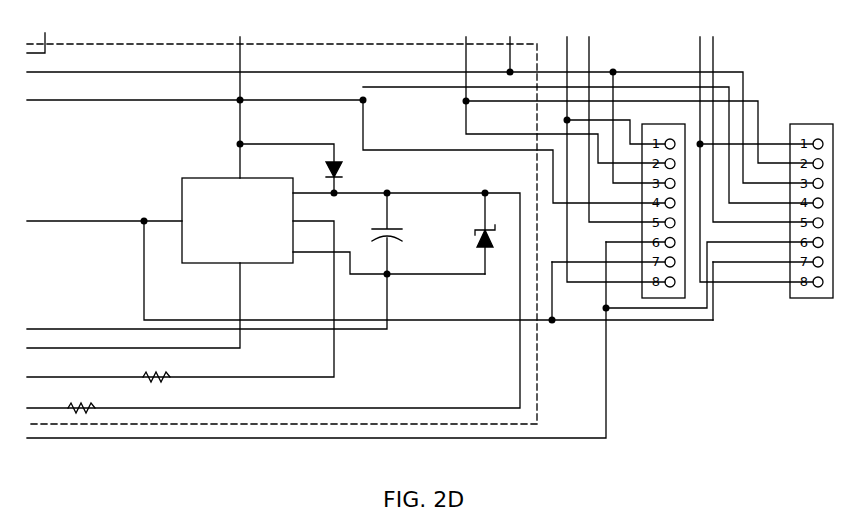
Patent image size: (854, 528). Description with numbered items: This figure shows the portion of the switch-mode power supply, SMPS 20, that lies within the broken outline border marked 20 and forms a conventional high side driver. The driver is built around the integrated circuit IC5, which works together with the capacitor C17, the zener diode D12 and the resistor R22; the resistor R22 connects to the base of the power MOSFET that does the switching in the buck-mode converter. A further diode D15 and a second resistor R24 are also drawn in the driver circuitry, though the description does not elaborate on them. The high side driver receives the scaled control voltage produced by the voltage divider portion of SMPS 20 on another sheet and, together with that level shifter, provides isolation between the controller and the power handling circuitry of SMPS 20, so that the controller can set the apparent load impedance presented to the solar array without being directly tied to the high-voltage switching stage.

The SMPS 20 is at (235, 424).
The high side driver integrated circuit IC5 is at (235, 223).
The bootstrap diode D15 is at (353, 170).
The capacitor C17 is at (396, 233).
The zener diode D12 is at (470, 233).
The resistor R22 is at (155, 368).
The resistor R24 is at (81, 399).